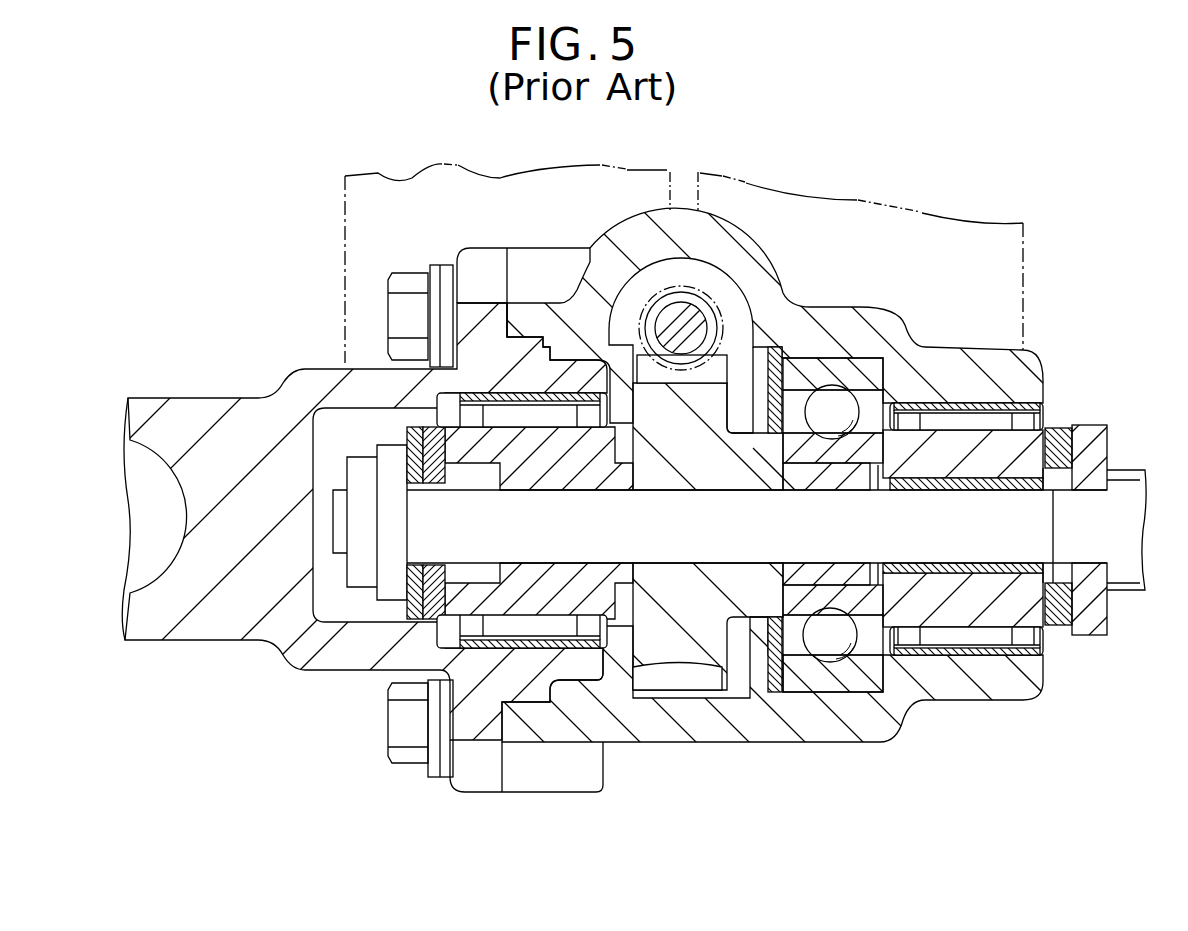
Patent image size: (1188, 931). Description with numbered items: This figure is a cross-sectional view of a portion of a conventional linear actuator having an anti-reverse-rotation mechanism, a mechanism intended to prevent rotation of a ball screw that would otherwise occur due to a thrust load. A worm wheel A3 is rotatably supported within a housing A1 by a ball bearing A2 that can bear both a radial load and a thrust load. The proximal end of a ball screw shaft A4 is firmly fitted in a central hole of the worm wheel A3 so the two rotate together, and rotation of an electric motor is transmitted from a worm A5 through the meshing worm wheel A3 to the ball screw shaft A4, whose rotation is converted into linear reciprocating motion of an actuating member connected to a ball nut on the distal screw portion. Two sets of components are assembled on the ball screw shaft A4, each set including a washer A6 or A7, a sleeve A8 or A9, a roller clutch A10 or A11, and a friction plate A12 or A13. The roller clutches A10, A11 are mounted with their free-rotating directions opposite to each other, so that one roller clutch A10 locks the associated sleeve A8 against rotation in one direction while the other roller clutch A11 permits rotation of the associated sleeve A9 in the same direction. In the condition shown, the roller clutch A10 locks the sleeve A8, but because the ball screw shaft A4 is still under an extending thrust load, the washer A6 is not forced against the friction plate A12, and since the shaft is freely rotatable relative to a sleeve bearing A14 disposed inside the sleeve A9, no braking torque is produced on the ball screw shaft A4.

The housing A1 is at (817, 727).
The ball bearing A2 is at (847, 373).
The worm wheel A3 is at (677, 680).
The ball screw shaft A4 is at (440, 532).
The worm A5 is at (717, 300).
The washer A6 is at (1097, 433).
The washer A7 is at (405, 437).
The sleeve A8 is at (1030, 453).
The sleeve A9 is at (447, 420).
The roller clutch A10 is at (965, 420).
The roller clutch A11 is at (497, 633).
The friction plate A12 is at (1057, 612).
The friction plate A13 is at (433, 603).
The sleeve bearing A14 is at (980, 600).